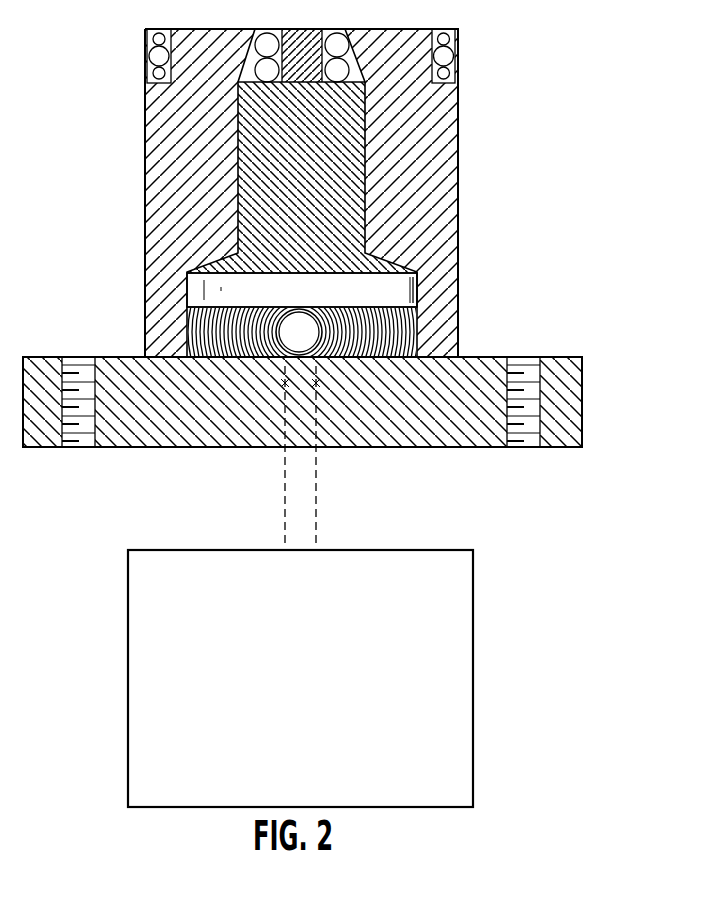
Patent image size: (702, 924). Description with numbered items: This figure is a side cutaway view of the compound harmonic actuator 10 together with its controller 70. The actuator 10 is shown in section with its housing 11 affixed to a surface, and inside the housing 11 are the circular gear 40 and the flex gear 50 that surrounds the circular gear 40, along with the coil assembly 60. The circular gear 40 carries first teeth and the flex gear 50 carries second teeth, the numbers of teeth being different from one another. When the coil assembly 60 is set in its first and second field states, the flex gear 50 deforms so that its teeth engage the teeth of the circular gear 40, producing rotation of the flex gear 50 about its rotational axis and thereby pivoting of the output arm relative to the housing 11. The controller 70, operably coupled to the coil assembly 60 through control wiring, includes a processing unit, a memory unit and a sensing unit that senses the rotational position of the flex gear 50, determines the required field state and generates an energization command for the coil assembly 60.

The compound harmonic actuator 10 is at (262, 188).
The housing 11 is at (458, 153).
The circular gear 40 is at (190, 298).
The flex gear 50 is at (417, 293).
The coil assembly 60 is at (298, 350).
The controller 70 is at (295, 705).